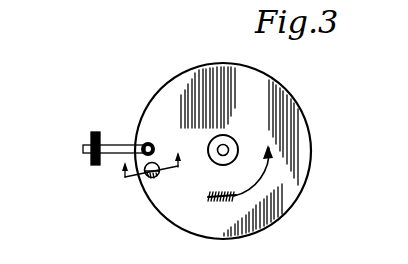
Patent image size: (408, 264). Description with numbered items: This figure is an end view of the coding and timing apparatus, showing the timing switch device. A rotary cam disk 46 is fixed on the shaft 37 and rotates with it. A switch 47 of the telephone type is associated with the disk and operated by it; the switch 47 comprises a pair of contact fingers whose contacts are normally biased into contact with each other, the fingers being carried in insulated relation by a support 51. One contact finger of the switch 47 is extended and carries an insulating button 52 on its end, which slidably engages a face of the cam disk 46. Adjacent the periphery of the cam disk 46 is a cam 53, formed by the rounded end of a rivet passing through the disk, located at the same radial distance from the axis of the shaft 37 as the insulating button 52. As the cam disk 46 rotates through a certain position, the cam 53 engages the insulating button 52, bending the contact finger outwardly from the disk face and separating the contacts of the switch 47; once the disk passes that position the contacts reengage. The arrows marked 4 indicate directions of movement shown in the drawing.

The rotary cam disk 46 is at (177, 89).
The shaft 37 is at (226, 147).
The switch 47 is at (117, 140).
The support 51 is at (92, 133).
The insulating button 52 is at (152, 142).
The cam 53 is at (153, 178).
The direction of movement 4 is at (157, 180).